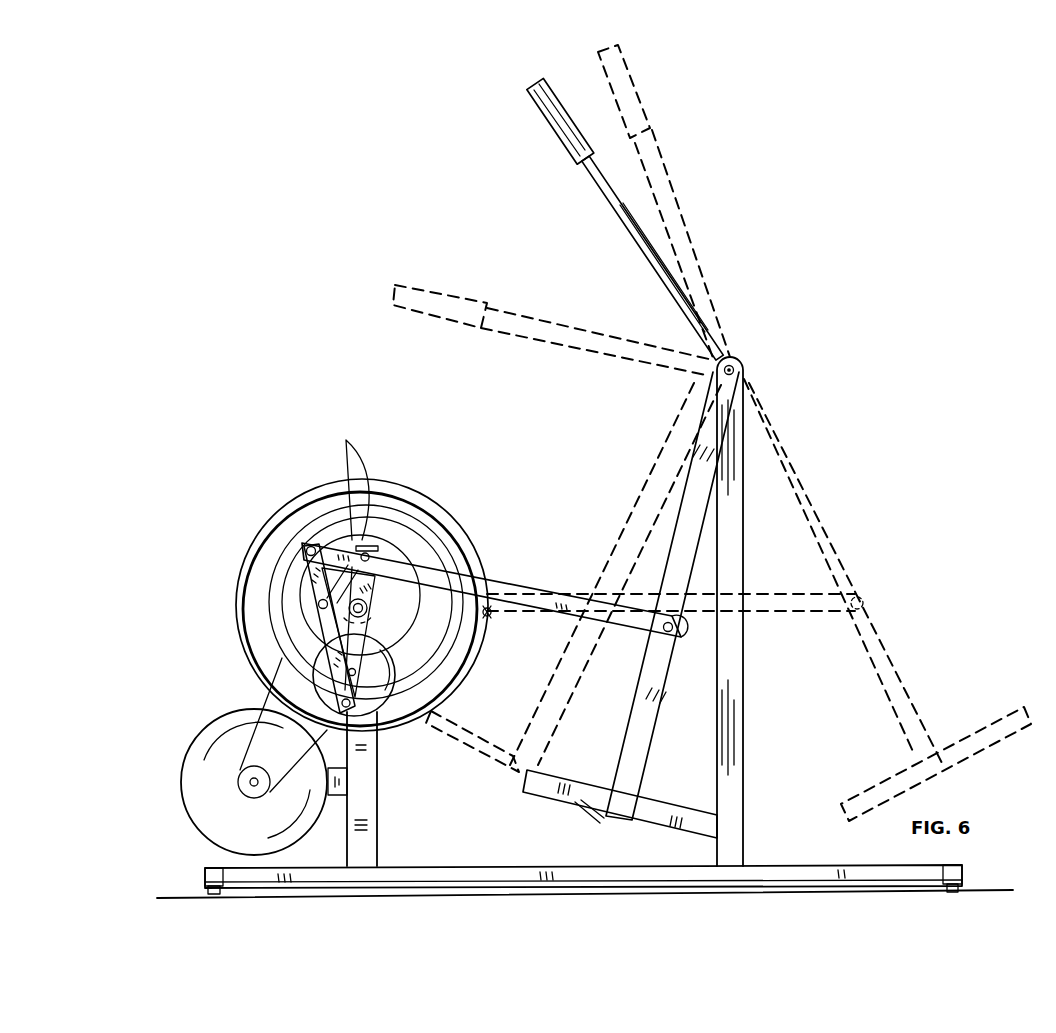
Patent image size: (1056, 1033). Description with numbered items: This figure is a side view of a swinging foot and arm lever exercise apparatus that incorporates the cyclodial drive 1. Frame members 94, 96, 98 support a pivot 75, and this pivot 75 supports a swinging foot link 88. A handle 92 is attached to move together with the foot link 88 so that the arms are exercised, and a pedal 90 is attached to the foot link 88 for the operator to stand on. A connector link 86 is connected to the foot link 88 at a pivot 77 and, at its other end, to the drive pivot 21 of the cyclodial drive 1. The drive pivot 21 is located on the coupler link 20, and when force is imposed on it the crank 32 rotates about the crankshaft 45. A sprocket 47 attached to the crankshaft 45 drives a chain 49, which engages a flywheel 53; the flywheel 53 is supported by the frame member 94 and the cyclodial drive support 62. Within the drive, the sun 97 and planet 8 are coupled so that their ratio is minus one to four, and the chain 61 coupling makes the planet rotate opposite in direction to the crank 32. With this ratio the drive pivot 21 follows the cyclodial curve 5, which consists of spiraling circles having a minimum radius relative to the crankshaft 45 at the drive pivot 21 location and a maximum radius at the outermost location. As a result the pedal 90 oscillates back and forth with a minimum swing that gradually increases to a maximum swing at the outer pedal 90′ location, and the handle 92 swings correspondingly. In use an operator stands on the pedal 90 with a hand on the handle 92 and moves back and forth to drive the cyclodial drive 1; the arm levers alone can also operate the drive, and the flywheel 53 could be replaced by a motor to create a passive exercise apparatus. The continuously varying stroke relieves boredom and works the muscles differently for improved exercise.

The cyclodial drive 1 is at (279, 484).
The cyclodial curve 5 is at (351, 486).
The planet 8 is at (393, 665).
The coupler link 20 is at (318, 617).
The drive pivot 21 is at (303, 546).
The crank 32 is at (368, 554).
The crankshaft 45 is at (350, 590).
The sprocket 47 is at (304, 572).
The chain 49 is at (278, 658).
The flywheel 53 is at (216, 716).
The chain 61 is at (380, 617).
The cyclodial drive support 62 is at (378, 805).
The pivot 75 is at (741, 367).
The pivot 77 is at (675, 630).
The connector link 86 is at (578, 595).
The foot link 88 is at (640, 696).
The pedal 90 is at (658, 800).
The pedal location 90′ is at (474, 723).
The handle 92 is at (548, 133).
The frame member 94 is at (350, 766).
The frame member 96 is at (744, 722).
The sun 97 is at (295, 588).
The frame member 98 is at (412, 868).